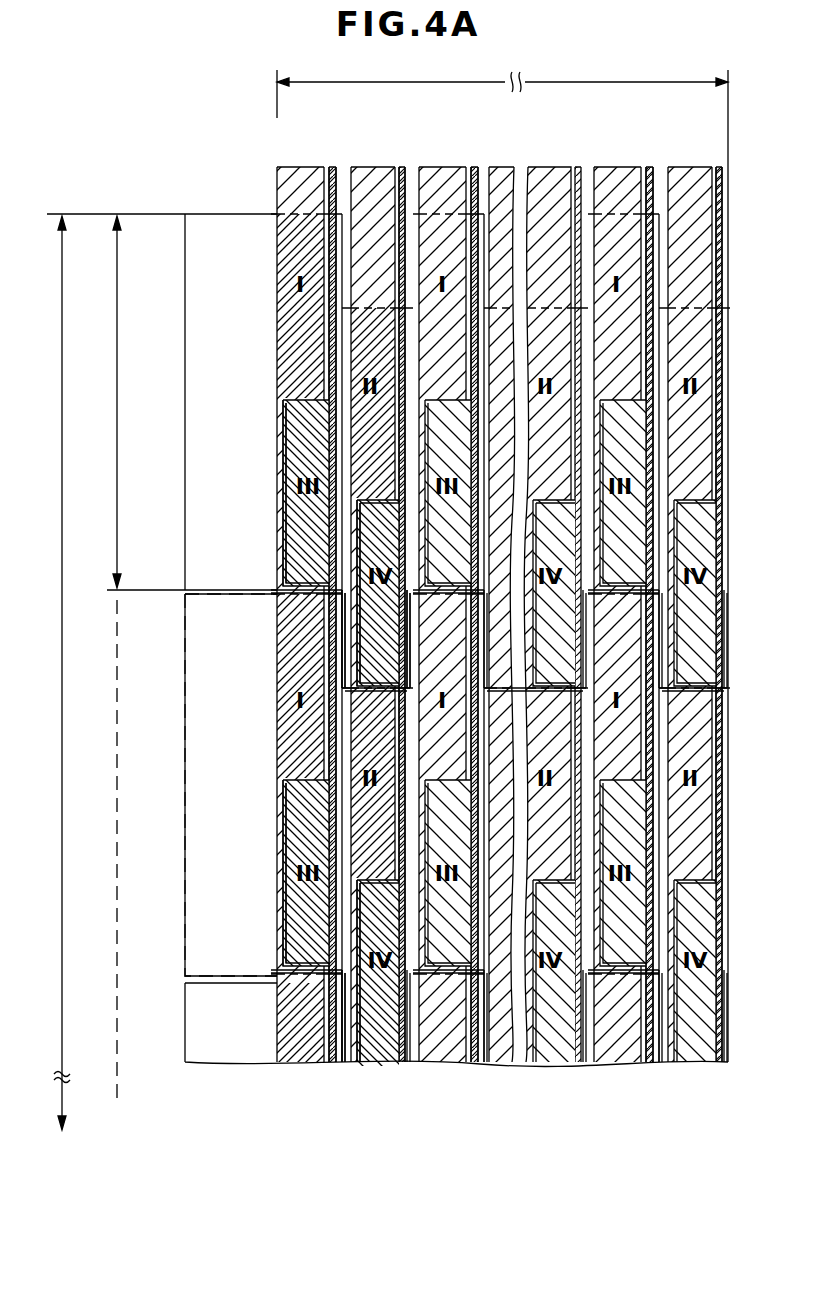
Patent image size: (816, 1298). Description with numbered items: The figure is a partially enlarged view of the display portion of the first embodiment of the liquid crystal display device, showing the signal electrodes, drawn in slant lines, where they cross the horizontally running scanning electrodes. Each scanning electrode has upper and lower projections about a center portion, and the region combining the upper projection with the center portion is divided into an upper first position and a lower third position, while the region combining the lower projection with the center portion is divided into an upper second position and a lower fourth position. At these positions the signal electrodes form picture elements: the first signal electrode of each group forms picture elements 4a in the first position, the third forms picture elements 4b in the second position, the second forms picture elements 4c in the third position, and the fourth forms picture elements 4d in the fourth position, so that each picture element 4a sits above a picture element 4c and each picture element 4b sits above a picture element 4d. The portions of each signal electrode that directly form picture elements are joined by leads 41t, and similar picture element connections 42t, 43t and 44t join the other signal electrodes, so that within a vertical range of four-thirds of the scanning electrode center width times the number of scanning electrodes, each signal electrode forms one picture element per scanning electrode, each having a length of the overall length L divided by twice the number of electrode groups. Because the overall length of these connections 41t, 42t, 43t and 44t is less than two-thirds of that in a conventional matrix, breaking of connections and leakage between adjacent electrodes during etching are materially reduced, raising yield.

The picture element 4a is at (290, 332).
The picture element 4b is at (355, 430).
The picture element 4c is at (292, 522).
The picture element 4d is at (362, 570).
The lead 41t is at (280, 482).
The picture element connection 42t is at (335, 720).
The picture element connection 43t is at (345, 540).
The picture element connection 44t is at (400, 796).
The length L is at (502, 560).